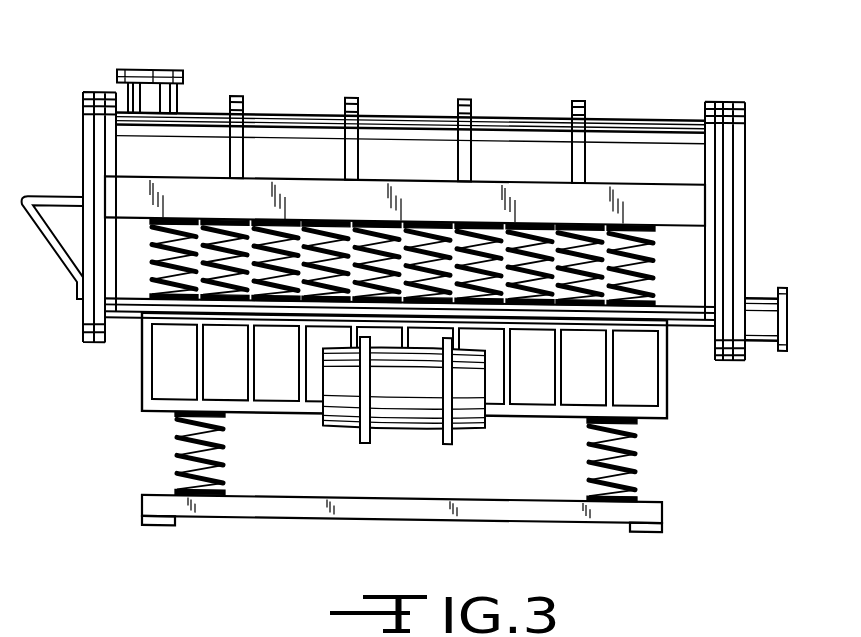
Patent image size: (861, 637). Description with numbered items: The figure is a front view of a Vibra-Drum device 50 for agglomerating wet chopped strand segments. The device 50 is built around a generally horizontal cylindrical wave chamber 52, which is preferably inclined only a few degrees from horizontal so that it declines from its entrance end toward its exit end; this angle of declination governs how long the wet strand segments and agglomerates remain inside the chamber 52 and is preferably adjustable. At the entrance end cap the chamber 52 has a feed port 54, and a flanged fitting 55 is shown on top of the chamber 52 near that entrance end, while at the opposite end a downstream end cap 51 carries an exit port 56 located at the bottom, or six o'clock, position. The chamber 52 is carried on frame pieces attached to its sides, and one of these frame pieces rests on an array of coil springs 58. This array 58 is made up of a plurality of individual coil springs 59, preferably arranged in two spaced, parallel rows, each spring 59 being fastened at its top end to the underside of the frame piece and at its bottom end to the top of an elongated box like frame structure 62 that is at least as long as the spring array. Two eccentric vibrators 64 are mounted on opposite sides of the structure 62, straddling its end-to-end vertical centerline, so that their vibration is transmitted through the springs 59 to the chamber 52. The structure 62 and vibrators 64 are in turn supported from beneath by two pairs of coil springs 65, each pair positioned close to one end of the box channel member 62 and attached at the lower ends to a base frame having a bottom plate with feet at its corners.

The Vibra-Drum device 50 is at (296, 106).
The downstream end cap 51 is at (746, 182).
The cylindrical wave chamber 52 is at (400, 114).
The feed port 54 is at (32, 186).
The inlet flange 55 is at (82, 117).
The exit port 56 is at (798, 316).
The array of coil springs 58 is at (375, 291).
The coil spring 59 is at (185, 287).
The box like frame structure 62 is at (668, 368).
The eccentric vibrator 64 is at (471, 436).
The pair of coil springs 65 is at (176, 448).